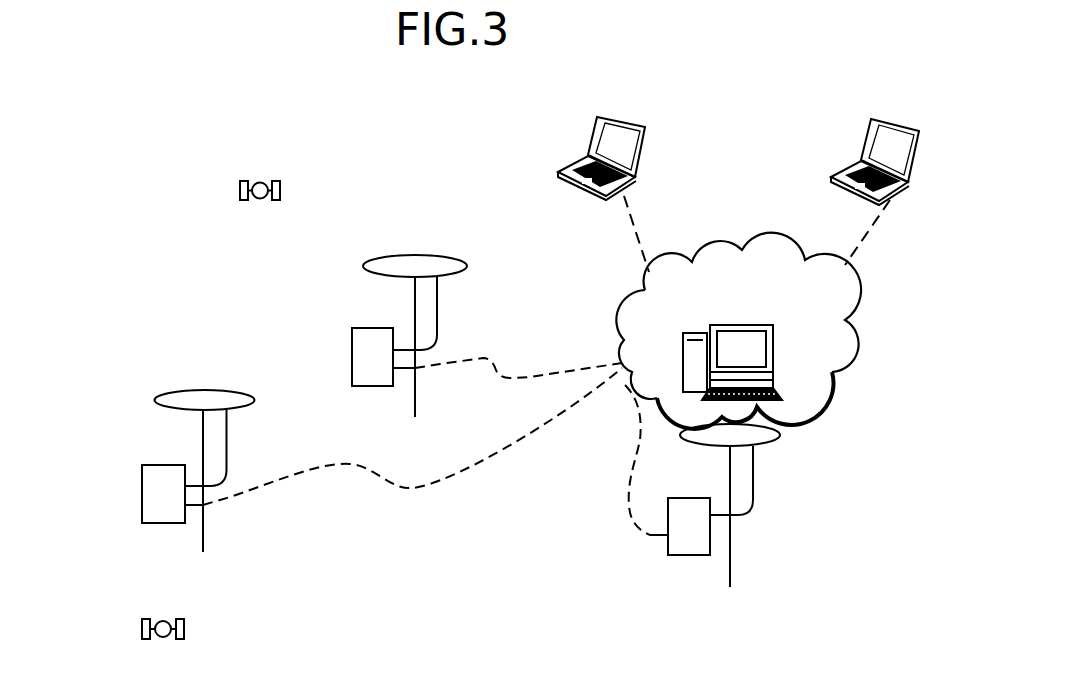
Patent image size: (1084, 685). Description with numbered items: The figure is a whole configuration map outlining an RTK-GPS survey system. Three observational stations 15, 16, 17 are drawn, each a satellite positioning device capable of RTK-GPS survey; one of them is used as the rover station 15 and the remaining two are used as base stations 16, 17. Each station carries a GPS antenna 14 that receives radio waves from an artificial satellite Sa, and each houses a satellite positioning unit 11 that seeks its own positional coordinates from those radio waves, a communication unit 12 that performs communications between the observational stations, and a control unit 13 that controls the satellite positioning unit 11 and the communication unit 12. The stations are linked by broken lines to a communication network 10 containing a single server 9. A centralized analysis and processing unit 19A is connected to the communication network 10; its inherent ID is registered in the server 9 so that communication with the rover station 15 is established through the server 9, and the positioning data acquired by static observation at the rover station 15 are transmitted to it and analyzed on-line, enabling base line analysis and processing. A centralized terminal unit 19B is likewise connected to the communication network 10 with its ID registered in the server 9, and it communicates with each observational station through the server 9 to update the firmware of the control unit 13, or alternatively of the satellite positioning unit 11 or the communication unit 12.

The server 9 is at (775, 379).
The communication network 10 is at (679, 263).
The satellite positioning unit 11 is at (401, 472).
The communication unit 12 is at (401, 472).
The control unit 13 is at (165, 513).
The GPS antenna 14 is at (212, 393).
The rover station 15 is at (773, 518).
The base station 16 is at (340, 315).
The base station 17 is at (130, 451).
The centralized analysis and processing unit 19A is at (626, 117).
The centralized terminal unit 19B is at (885, 118).
The artificial satellite Sa is at (267, 180).